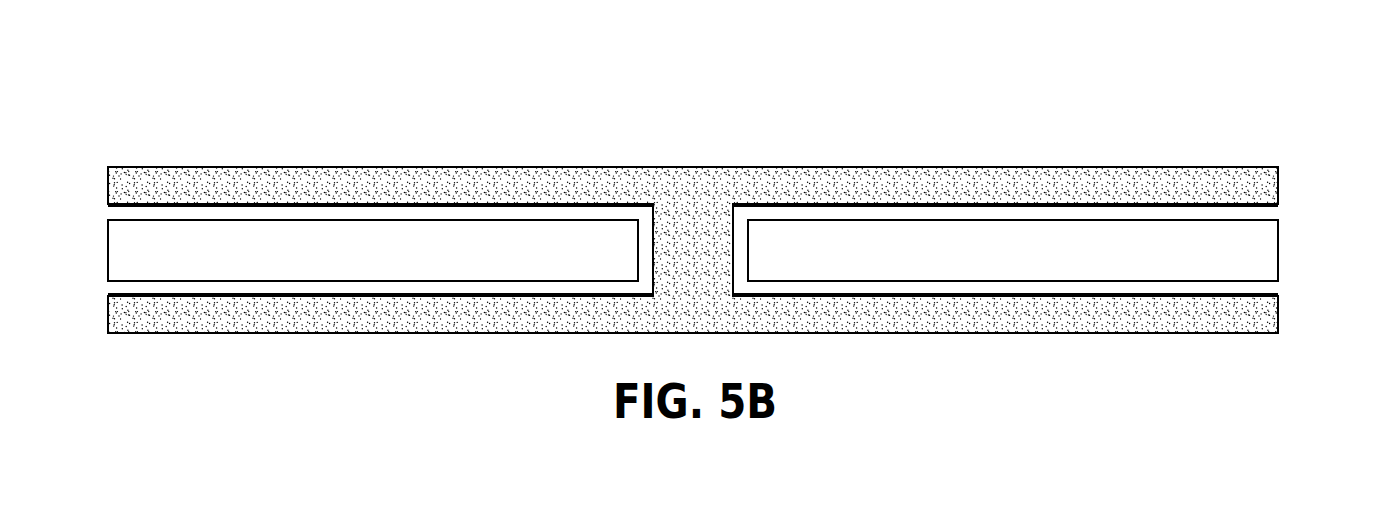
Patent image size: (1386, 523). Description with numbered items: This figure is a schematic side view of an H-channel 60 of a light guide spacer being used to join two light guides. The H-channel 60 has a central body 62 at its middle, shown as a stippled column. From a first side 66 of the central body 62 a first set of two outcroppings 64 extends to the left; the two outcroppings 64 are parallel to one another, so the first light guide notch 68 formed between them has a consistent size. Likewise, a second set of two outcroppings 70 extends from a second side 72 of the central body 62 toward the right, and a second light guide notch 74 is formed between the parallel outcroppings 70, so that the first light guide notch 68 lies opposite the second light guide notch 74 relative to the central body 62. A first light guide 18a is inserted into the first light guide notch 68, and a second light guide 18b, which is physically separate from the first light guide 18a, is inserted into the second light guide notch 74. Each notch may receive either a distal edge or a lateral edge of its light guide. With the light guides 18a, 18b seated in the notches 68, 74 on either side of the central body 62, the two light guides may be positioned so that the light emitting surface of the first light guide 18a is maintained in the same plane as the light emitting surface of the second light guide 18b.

The H-channel 60 is at (964, 91).
The central body 62 is at (700, 197).
The first set of two outcroppings 64 is at (220, 188).
The first side 66 is at (653, 243).
The first light guide notch 68 is at (105, 208).
The second set of two outcroppings 70 is at (1130, 193).
The second side 72 is at (733, 247).
The second light guide notch 74 is at (1282, 207).
The first light guide 18a is at (142, 243).
The second light guide 18b is at (1247, 267).